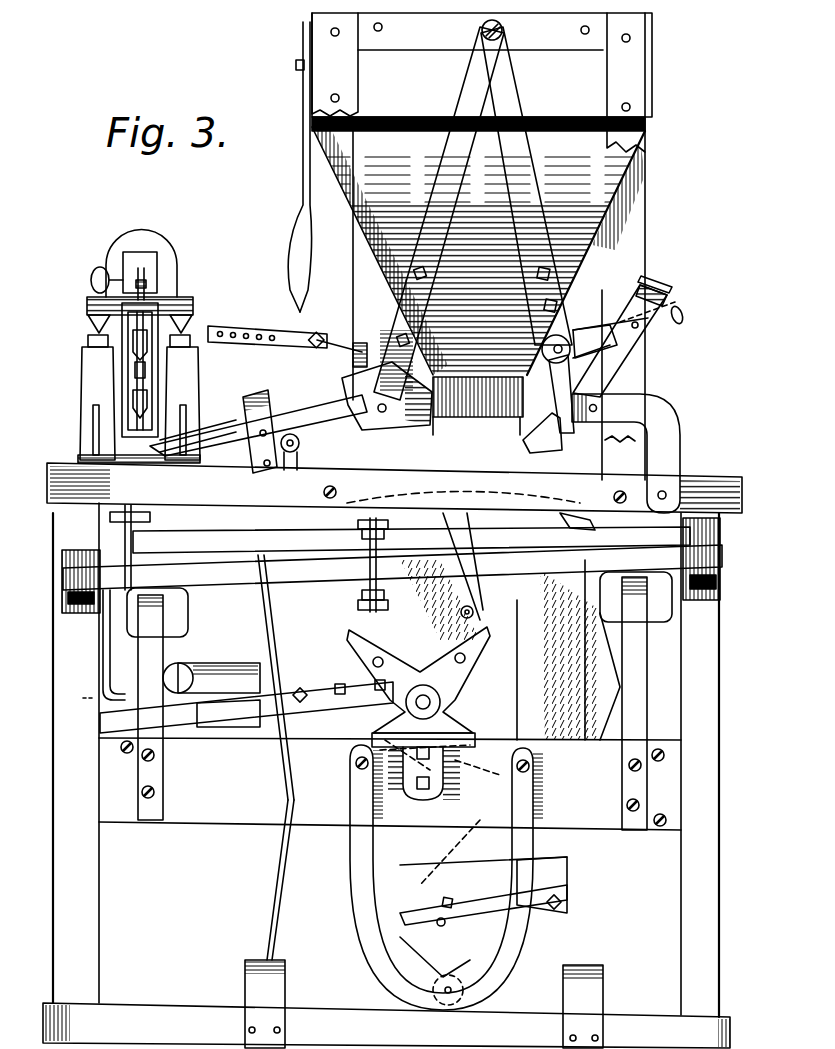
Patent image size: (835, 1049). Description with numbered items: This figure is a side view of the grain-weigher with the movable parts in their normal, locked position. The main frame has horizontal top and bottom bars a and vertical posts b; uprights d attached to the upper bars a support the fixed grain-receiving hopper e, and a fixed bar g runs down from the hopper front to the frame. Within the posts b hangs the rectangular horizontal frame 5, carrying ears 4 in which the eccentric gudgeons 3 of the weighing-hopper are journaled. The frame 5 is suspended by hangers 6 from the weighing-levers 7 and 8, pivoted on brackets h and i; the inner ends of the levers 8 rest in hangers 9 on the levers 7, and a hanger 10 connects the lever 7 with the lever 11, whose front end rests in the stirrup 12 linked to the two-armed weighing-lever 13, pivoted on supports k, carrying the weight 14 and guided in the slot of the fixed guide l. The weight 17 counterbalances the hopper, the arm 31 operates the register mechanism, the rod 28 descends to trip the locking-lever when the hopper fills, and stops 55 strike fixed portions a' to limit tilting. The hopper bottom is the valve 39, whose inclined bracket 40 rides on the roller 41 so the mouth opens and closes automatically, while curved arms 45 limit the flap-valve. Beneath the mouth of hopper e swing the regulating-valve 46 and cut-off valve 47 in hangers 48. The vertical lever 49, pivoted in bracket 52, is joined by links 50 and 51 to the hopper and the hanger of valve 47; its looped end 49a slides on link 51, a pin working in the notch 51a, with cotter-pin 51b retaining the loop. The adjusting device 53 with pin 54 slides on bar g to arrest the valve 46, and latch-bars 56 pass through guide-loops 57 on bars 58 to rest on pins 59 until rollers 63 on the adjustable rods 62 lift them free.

The lateral pivots or gudgeons 3 is at (430, 700).
The ears 4 is at (430, 723).
The rectangular horizontal frame 5 is at (218, 812).
The hangers 6 is at (160, 665).
The weighing-levers 7 is at (570, 648).
The weighing-levers 8 is at (232, 580).
The hangers 9 is at (380, 540).
The hanger 10 is at (152, 517).
The lever 11 is at (130, 395).
The stirrup or link 12 is at (128, 370).
The two-armed weighing-lever 13 is at (150, 290).
The weight 14 is at (150, 262).
The weight 17 is at (215, 668).
The rod 28 is at (110, 660).
The arm 31 is at (246, 706).
The valve 39 is at (483, 917).
The angular bracket 40 is at (470, 955).
The roller 41 is at (463, 992).
The curved arms 45 is at (367, 915).
The regulating-valve 46 is at (387, 404).
The cut-off valve 47 is at (542, 433).
The hangers 48 is at (474, 226).
The lever 49 is at (613, 368).
The slot or loop 49a is at (655, 285).
The link or bar 50 is at (565, 522).
The link 51 is at (643, 337).
The elongated notch or recess 51a is at (605, 328).
The cotter-pin 51b is at (683, 310).
The bracket 52 is at (680, 432).
The adjusting device 53 is at (310, 338).
The pin 54 is at (220, 330).
The stops 55 is at (270, 882).
The latch-bars 56 is at (275, 364).
The guide-loops 57 is at (245, 431).
The bars 58 is at (265, 515).
The pin 59 is at (262, 440).
The screw-threaded rods 62 is at (298, 462).
The antifriction-rollers 63 is at (300, 440).
The horizontal top and bottom bars a is at (390, 755).
The fixed portions of the main frame a' is at (436, 1004).
The vertical bars or posts b is at (53, 838).
The chute c' is at (478, 408).
The vertical bars or uprights d is at (655, 245).
The grain-receiving hopper e is at (482, 194).
The bars g is at (292, 240).
The brackets h is at (722, 590).
The brackets i is at (62, 605).
The vertical supports k is at (139, 380).
The fixed vertical guide l is at (134, 255).